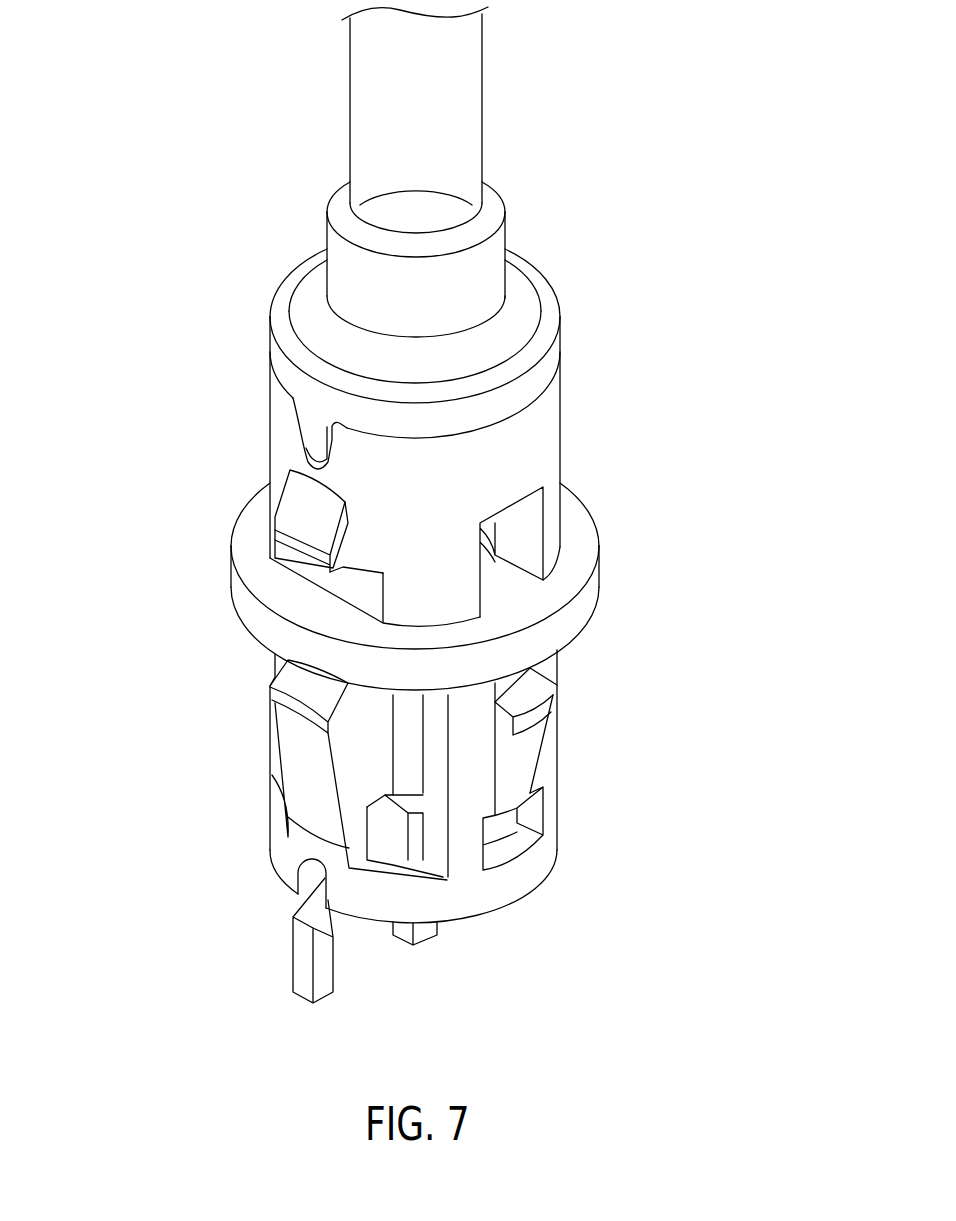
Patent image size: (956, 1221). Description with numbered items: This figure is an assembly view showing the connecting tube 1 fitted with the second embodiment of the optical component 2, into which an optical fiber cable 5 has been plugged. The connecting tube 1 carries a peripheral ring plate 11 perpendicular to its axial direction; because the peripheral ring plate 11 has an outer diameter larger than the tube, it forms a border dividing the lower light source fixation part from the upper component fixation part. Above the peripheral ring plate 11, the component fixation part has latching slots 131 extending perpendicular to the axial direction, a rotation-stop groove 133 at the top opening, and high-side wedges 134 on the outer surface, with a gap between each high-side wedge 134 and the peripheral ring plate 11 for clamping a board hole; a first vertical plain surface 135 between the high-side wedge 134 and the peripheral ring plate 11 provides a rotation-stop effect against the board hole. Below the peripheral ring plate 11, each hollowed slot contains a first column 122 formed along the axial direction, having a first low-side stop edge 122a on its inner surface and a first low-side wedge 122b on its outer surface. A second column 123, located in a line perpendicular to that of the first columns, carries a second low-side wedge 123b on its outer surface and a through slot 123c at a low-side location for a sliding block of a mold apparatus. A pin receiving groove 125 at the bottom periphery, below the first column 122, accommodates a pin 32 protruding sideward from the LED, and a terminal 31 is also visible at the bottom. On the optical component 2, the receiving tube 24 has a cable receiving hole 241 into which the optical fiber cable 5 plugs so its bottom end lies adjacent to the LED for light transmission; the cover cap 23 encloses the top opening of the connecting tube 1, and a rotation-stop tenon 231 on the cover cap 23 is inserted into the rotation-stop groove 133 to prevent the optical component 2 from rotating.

The connecting tube 1 is at (613, 398).
The optical component 2 is at (574, 169).
The optical fiber cable 5 is at (380, 80).
The peripheral ring plate 11 is at (583, 600).
The cover cap 23 is at (547, 307).
The receiving tube 24 is at (493, 250).
The first terminal 31 is at (413, 833).
The pins 32 is at (303, 955).
The first column 122 is at (302, 757).
The first low-side stop edge 122a is at (384, 800).
The first low-side wedge 122b is at (297, 697).
The second column 123 is at (533, 740).
The second low-side wedge 123b is at (533, 693).
The through slot 123c is at (530, 812).
The pin receiving groove 125 is at (303, 885).
The latching slot 131 is at (528, 533).
The rotation-stop groove 133 is at (328, 460).
The high-side wedge 134 is at (303, 498).
The first vertical plain surface 135 is at (318, 575).
The rotation-stop tenon 231 is at (310, 423).
The cable receiving hole 241 is at (363, 212).